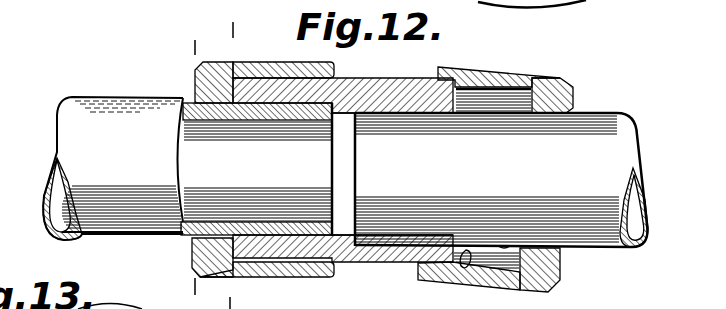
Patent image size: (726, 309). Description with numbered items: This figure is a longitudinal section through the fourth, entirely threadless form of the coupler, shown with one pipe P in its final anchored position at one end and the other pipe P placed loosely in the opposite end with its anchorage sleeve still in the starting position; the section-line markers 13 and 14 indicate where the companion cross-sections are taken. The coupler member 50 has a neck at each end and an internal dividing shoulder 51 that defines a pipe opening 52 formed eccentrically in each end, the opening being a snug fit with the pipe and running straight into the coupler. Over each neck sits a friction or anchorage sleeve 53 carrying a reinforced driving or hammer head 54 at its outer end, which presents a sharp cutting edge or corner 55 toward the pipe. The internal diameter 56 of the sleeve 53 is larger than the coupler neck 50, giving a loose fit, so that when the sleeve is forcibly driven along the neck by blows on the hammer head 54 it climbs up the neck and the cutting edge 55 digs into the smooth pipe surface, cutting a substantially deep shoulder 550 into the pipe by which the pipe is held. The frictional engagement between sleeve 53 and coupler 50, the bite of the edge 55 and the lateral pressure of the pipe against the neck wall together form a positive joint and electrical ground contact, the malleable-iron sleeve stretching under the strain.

The pipe P is at (69, 150).
The coupler member neck 50 is at (413, 95).
The dividing shoulder 51 is at (346, 228).
The pipe opening 52 is at (318, 106).
The anchorage sleeve 53 is at (272, 68).
The hammer head 54 is at (197, 79).
The cutting edge 55 is at (503, 247).
The internal diameter of sleeve 56 is at (457, 268).
The shoulder cut into pipe 550 is at (251, 228).
The section line of Fig. 13 is at (152, 47).
The section line of Fig. 14 is at (198, 28).